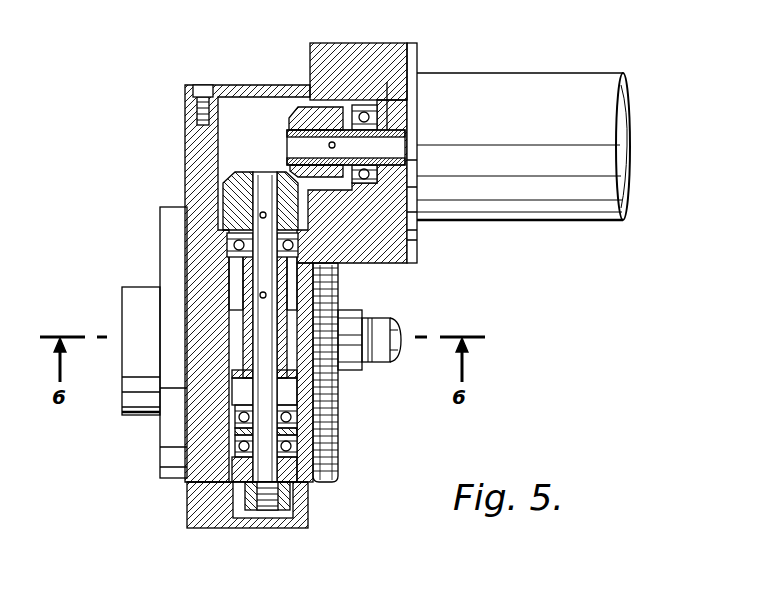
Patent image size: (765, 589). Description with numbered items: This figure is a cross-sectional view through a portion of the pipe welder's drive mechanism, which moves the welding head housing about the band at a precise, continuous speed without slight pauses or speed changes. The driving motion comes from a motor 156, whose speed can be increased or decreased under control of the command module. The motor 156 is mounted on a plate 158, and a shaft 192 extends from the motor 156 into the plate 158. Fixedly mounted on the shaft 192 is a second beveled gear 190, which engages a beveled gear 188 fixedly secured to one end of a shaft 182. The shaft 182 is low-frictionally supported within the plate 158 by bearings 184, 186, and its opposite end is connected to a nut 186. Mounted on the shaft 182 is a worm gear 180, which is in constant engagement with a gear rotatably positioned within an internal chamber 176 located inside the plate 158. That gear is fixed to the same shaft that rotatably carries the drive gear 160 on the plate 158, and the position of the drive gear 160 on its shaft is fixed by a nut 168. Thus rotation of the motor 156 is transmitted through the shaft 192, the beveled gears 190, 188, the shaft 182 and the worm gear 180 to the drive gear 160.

The motor 156 is at (640, 113).
The plate 158 is at (377, 57).
The drive gear 160 is at (340, 418).
The nut 168 is at (376, 364).
The internal chamber 176 is at (212, 405).
The worm gear 180 is at (248, 332).
The shaft 182 is at (220, 187).
The bearing 184 is at (308, 478).
The bearing / nut 186 is at (340, 273).
The beveled gear 188 is at (222, 186).
The second beveled gear 190 is at (290, 110).
The shaft 192 is at (400, 147).